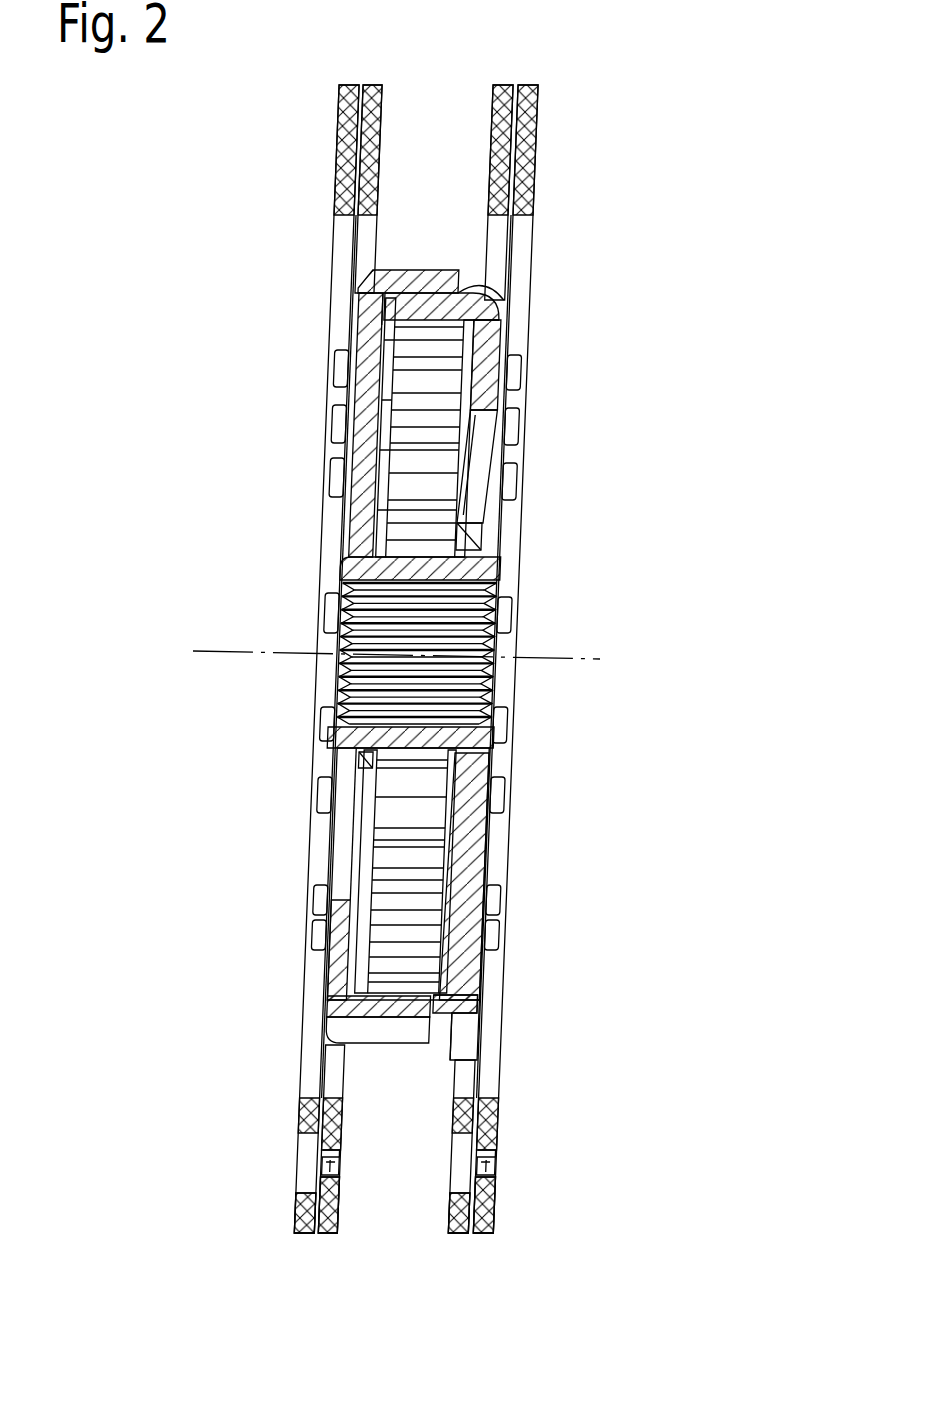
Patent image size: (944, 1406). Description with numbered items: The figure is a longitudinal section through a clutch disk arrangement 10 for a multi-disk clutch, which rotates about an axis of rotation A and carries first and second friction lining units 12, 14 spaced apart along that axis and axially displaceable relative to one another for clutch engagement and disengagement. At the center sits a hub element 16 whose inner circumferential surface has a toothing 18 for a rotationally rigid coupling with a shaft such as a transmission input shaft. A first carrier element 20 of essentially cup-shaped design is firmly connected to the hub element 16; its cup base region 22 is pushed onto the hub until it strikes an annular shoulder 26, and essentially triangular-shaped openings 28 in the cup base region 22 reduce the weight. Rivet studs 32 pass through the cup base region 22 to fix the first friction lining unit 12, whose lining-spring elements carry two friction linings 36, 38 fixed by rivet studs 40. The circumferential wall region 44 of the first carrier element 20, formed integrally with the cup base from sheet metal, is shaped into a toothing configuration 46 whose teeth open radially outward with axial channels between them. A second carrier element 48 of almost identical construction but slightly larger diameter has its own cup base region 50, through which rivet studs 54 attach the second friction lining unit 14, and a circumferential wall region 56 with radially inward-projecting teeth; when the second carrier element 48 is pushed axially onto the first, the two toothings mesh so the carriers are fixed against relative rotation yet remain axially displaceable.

The clutch disk arrangement 10 is at (607, 83).
The first friction lining unit 12 is at (517, 68).
The second friction lining unit 14 is at (353, 70).
The hub element 16 is at (487, 567).
The toothing 18 is at (500, 608).
The first carrier element 20 is at (498, 348).
The cup base region 22 is at (487, 402).
The annular shoulder 26 is at (510, 533).
The triangular-shaped openings 28 is at (523, 458).
The rivet studs 32 is at (527, 373).
The friction lining 36 is at (298, 1233).
The friction lining 38 is at (490, 1218).
The rivet studs 40 is at (332, 1165).
The circumferential wall region 44 is at (445, 300).
The toothing configuration 46 is at (455, 325).
The second carrier element 48 is at (372, 320).
The cup base region 50 is at (372, 403).
The rivet studs 54 is at (400, 300).
The circumferential wall region 56 is at (410, 280).
The axis of rotation A is at (552, 658).